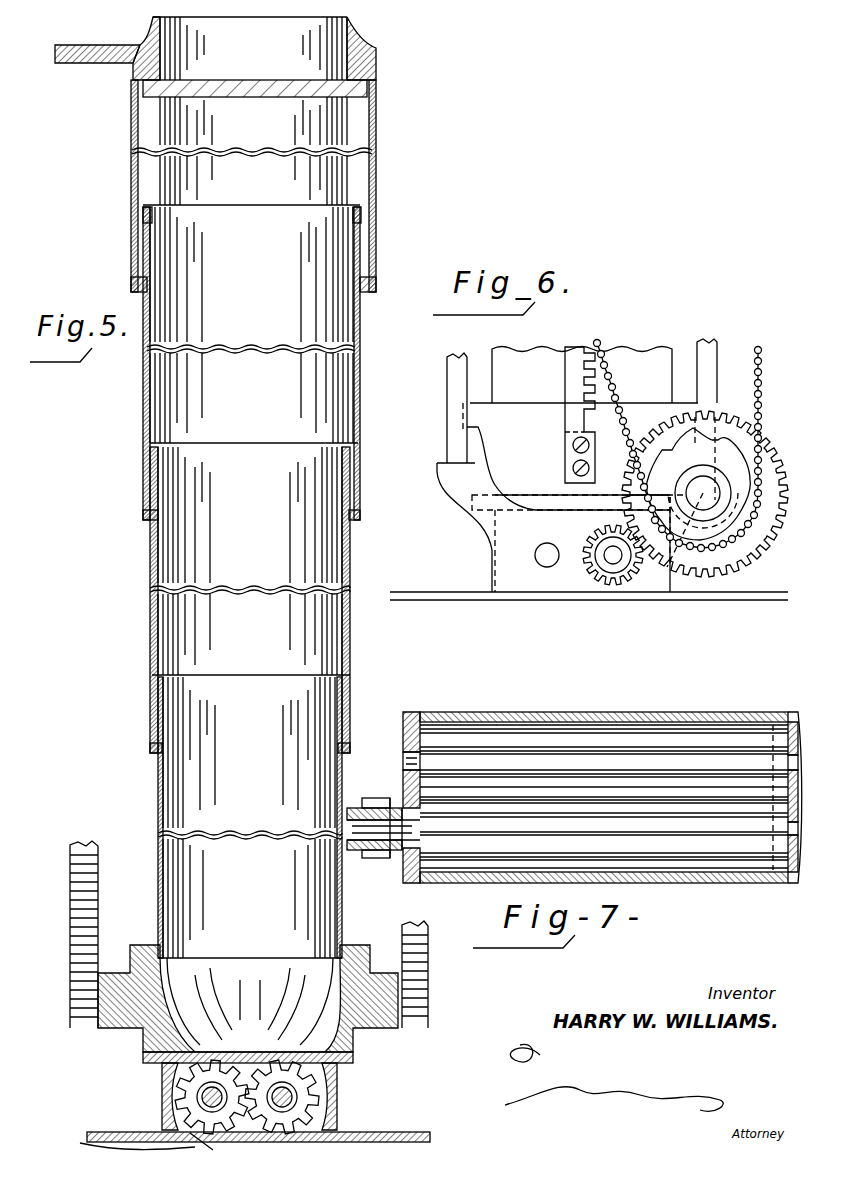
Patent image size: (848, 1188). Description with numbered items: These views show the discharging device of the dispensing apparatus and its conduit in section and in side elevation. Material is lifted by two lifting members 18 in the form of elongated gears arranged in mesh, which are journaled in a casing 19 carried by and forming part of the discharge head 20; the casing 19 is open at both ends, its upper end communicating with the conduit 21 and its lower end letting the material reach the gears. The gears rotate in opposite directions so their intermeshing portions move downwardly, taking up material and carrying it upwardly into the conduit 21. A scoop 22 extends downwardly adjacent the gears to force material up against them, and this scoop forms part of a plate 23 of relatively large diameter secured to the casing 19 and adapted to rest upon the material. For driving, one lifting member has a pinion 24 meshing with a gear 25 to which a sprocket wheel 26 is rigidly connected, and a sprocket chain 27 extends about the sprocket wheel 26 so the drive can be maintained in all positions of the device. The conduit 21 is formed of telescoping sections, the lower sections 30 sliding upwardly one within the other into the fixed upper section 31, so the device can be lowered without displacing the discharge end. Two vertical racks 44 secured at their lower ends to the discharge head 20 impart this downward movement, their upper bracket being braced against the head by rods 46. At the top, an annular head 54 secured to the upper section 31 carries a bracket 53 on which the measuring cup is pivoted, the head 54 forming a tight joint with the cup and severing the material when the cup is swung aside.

In FIG. 5, the lifting members 18 is at (318, 1085).
In FIG. 7, the lifting members 18 is at (635, 747).
In FIG. 5, the casing 19 is at (340, 1107).
In FIG. 7, the casing 19 is at (566, 712).
In FIG. 5, the discharge head 20 is at (250, 1001).
In FIG. 6, the discharge head 20 is at (536, 455).
In FIG. 5, the conduit 21 is at (342, 908).
In FIG. 6, the conduit 21 is at (553, 348).
In FIG. 5, the scoop 22 is at (126, 1138).
In FIG. 5, the plate 23 is at (117, 1132).
In FIG. 6, the plate 23 is at (430, 592).
In FIG. 6, the pinion 24 is at (592, 532).
In FIG. 7, the pinion 24 is at (376, 798).
In FIG. 6, the gear 25 is at (770, 450).
In FIG. 6, the sprocket wheel 26 is at (728, 443).
In FIG. 6, the sprocket chain 27 is at (762, 350).
In FIG. 5, the lower telescoping sections 30 is at (352, 548).
In FIG. 5, the upper telescoping section 31 is at (350, 177).
In FIG. 5, the vertical racks 44 is at (98, 893).
In FIG. 6, the vertical racks 44 is at (565, 375).
In FIG. 6, the rods 46 is at (447, 392).
In FIG. 5, the bracket 53 is at (88, 63).
In FIG. 5, the annular head 54 is at (373, 38).